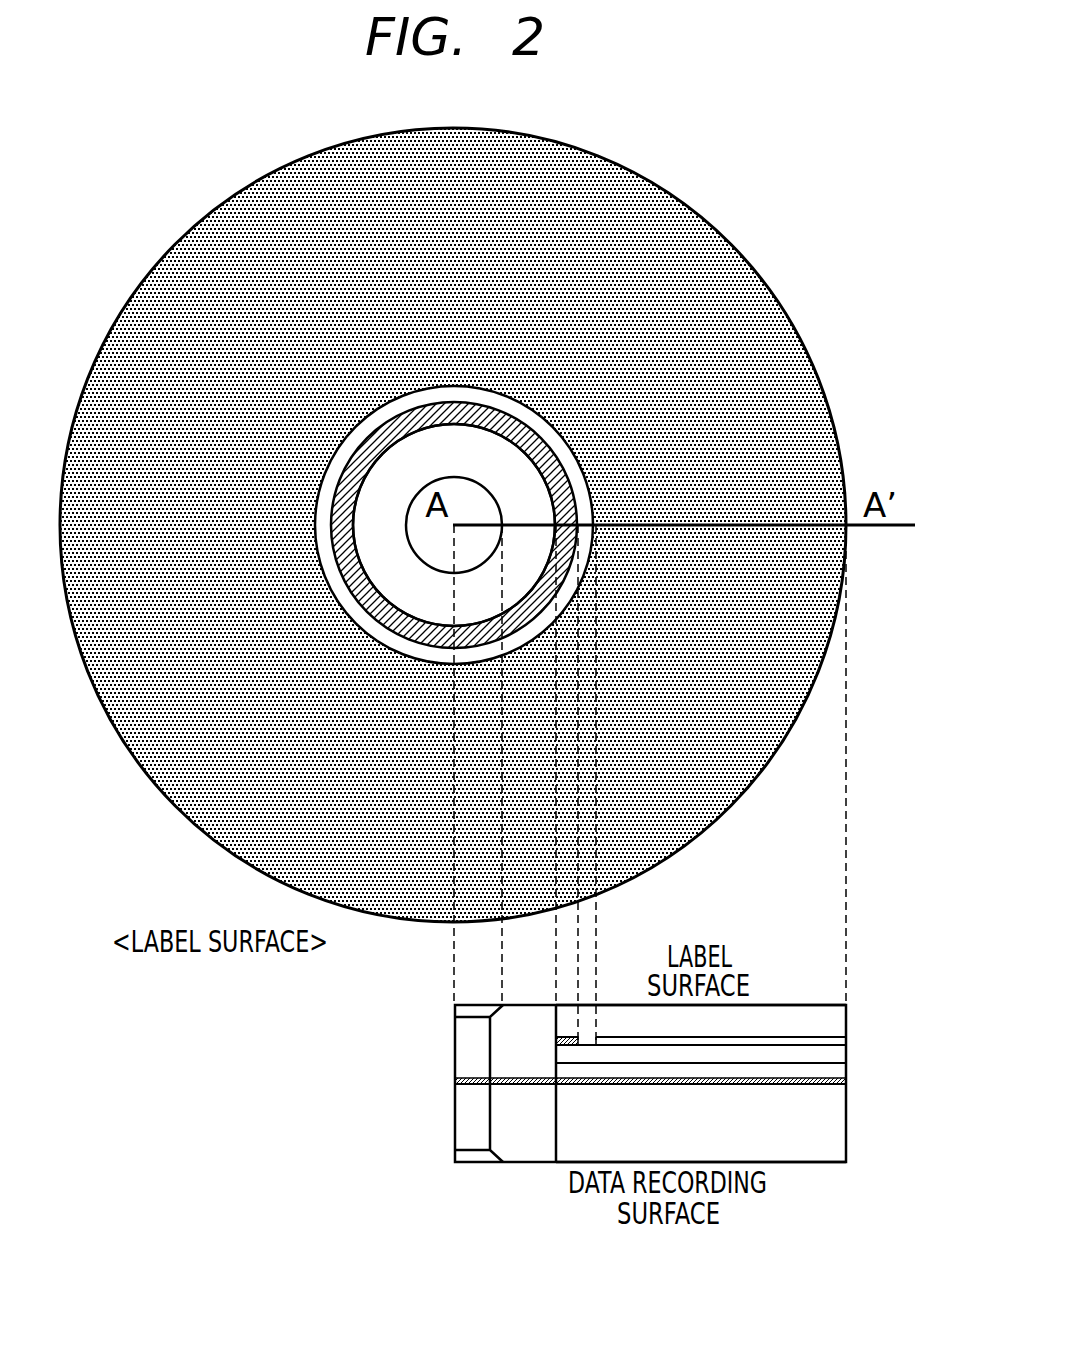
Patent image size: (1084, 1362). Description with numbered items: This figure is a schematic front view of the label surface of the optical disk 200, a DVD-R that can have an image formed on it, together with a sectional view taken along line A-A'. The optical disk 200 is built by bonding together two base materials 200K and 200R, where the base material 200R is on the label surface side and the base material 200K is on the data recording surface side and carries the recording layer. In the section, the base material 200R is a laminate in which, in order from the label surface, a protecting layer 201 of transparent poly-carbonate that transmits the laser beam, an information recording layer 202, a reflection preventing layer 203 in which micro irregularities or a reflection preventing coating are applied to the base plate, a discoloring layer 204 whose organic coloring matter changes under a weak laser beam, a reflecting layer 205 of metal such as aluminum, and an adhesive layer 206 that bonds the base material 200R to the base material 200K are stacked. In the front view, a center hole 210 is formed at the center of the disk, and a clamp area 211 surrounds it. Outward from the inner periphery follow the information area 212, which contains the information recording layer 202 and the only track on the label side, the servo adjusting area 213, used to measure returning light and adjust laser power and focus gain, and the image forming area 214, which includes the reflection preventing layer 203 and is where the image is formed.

The optical disk 200 is at (128, 246).
The image forming area 214 is at (800, 368).
The servo adjusting area 213 is at (606, 504).
The information area 212 is at (560, 460).
The clamp area 211 is at (510, 473).
The center hole 210 is at (458, 487).
The protecting layer 201 is at (838, 1015).
The information recording layer 202 is at (567, 1035).
The reflection preventing layer 203 is at (838, 1040).
The discoloring layer 204 is at (838, 1052).
The reflecting layer 205 is at (838, 1068).
The adhesive layer 206 is at (838, 1084).
The base material of the label surface side 200R is at (793, 985).
The base material of the data recording surface side 200K is at (805, 1186).